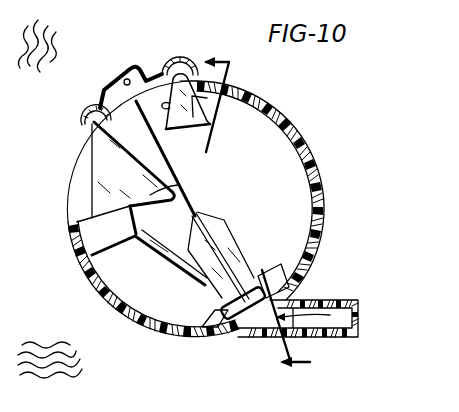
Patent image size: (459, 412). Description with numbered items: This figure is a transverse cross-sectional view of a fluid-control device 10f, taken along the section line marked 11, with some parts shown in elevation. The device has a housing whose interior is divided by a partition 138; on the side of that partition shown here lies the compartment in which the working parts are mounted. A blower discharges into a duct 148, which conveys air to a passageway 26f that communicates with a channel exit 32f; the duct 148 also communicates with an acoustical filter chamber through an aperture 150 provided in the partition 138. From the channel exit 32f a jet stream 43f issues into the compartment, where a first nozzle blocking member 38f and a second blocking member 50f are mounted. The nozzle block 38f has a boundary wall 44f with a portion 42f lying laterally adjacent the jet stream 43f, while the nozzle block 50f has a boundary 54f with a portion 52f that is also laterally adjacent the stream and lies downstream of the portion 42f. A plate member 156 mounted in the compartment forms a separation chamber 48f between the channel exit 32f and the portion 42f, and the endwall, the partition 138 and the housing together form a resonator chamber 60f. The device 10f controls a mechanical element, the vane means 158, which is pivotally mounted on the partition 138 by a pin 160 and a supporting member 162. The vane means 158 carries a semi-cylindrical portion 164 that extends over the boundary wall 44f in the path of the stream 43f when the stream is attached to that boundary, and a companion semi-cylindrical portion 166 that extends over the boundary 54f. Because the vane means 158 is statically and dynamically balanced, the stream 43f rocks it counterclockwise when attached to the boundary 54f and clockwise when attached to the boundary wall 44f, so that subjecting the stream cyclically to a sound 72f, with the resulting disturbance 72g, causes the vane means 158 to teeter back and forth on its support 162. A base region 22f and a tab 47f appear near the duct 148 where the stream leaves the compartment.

The seventh embodiment 10f is at (156, 337).
The section line 11 is at (267, 213).
The base member 22f is at (258, 330).
The passageway 26f is at (233, 258).
The channel exit 32f is at (195, 212).
The first nozzle blocking member 38f is at (128, 190).
The portion 42f is at (178, 185).
The jet stream 43f is at (177, 170).
The boundary wall 44f is at (134, 164).
The tab 47f is at (290, 298).
The separation means or chamber 48f is at (152, 220).
The second blocking member 50f is at (200, 57).
The portion 52f is at (212, 127).
The boundary 54f is at (240, 93).
The resonator chamber 60f is at (221, 146).
The sound 72f is at (60, 32).
The water 72g is at (68, 357).
The interior partition 138 is at (91, 140).
The duct 148 is at (357, 322).
The aperture 150 is at (223, 318).
The plate member 156 is at (157, 255).
The vane means 158 is at (108, 84).
The pin 160 is at (139, 65).
The supporting member 162 is at (122, 84).
The semi-cylindrical portion 164 is at (86, 110).
The lug 166 is at (182, 54).